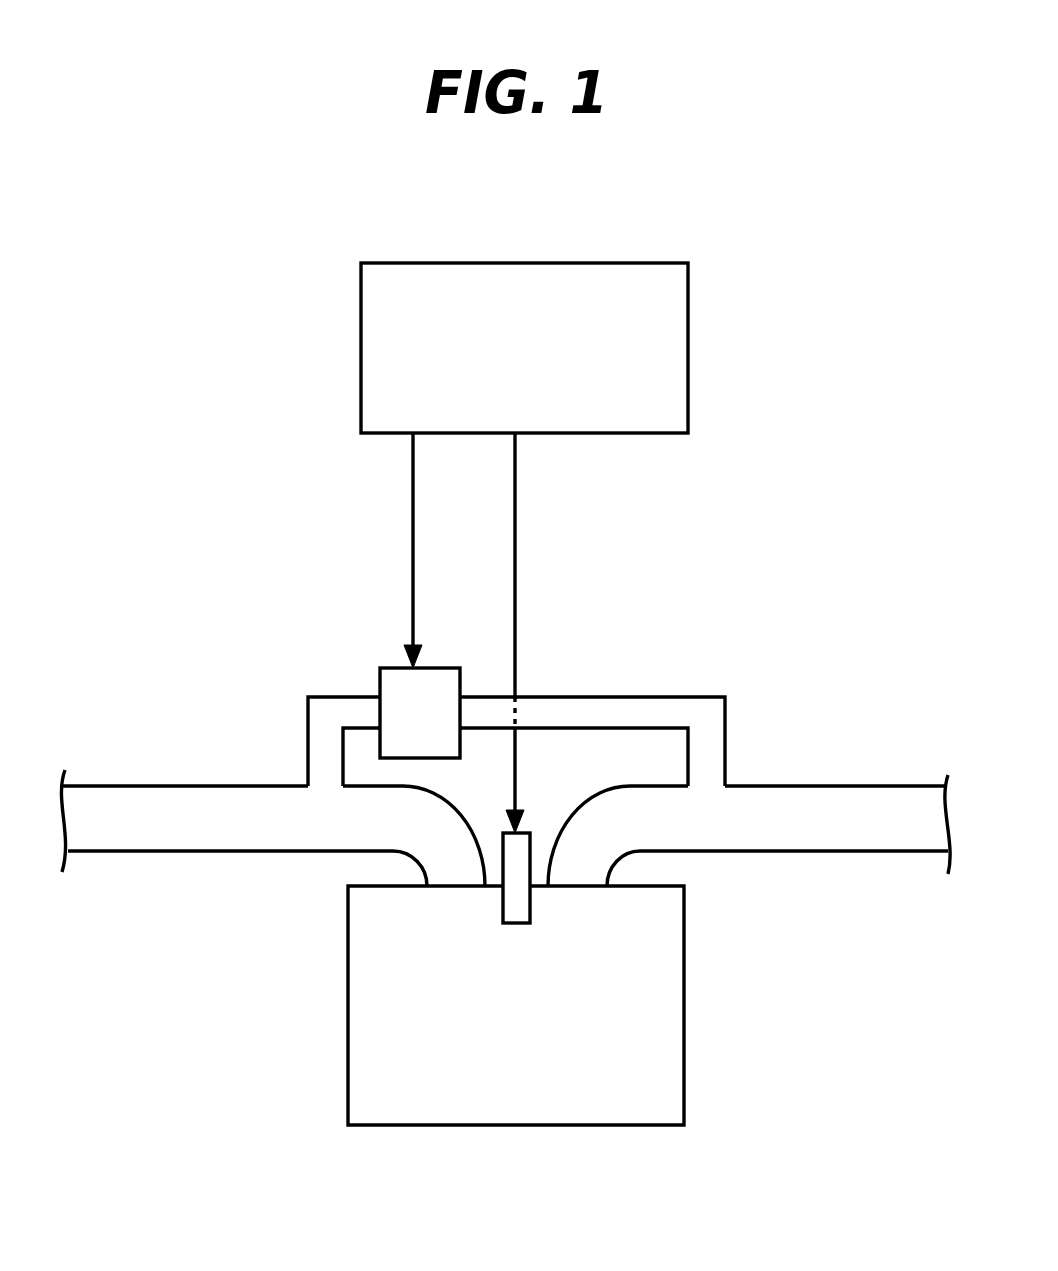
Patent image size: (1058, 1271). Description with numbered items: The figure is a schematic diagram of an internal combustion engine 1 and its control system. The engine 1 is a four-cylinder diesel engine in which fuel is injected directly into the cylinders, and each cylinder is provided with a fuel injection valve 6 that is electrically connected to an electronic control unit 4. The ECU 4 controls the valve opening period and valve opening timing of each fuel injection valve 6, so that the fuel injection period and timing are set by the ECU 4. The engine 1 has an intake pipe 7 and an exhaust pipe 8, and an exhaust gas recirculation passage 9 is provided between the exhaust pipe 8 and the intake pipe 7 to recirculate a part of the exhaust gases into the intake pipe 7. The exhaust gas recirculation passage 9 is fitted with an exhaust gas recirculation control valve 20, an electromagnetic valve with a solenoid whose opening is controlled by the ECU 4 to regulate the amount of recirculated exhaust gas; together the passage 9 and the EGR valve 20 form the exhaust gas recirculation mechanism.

The internal combustion engine 1 is at (500, 1123).
The electronic control unit 4 is at (445, 263).
The fuel injection valve 6 is at (525, 833).
The intake pipe 7 is at (255, 786).
The exhaust pipe 8 is at (835, 852).
The exhaust gas recirculation passage 9 is at (612, 697).
The exhaust gas recirculation control valve 20 is at (453, 668).